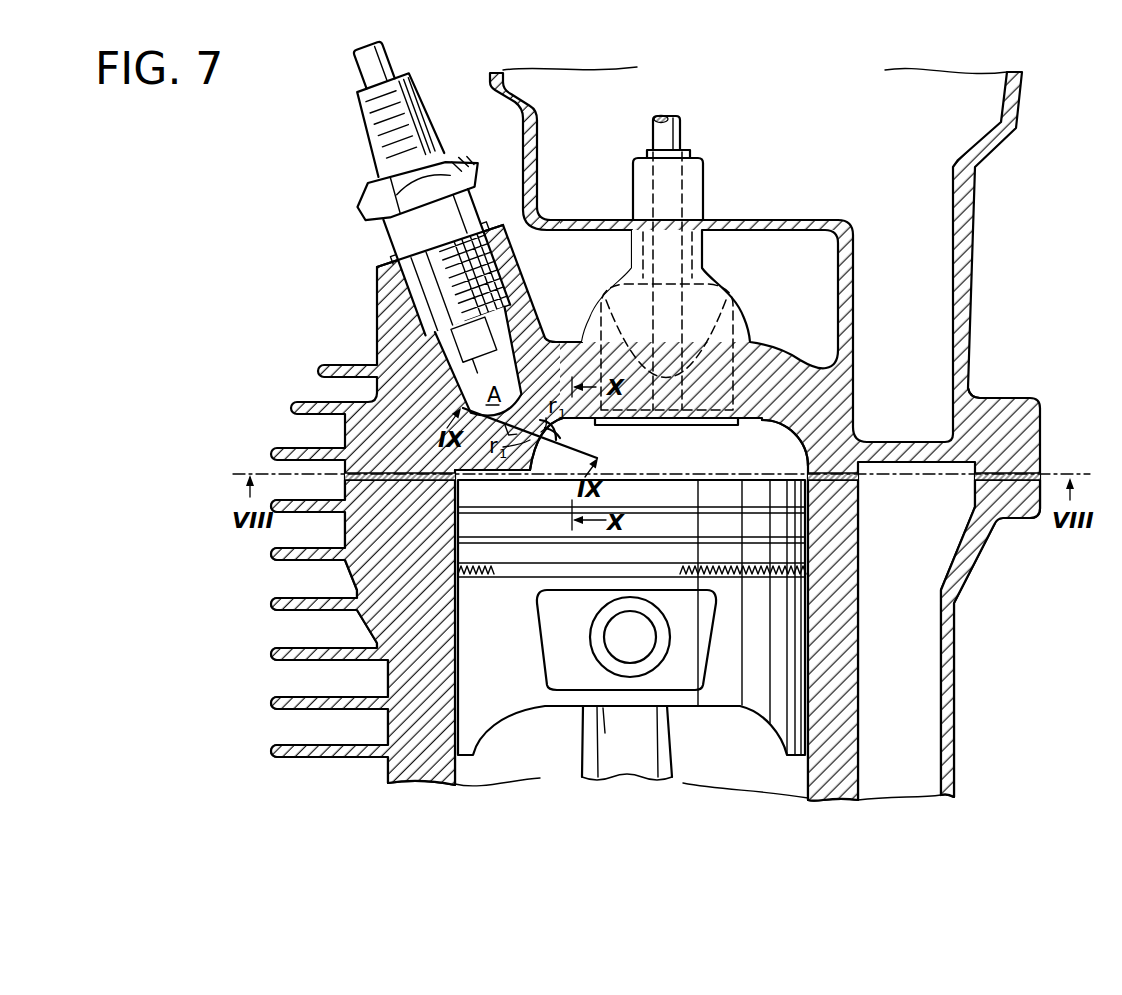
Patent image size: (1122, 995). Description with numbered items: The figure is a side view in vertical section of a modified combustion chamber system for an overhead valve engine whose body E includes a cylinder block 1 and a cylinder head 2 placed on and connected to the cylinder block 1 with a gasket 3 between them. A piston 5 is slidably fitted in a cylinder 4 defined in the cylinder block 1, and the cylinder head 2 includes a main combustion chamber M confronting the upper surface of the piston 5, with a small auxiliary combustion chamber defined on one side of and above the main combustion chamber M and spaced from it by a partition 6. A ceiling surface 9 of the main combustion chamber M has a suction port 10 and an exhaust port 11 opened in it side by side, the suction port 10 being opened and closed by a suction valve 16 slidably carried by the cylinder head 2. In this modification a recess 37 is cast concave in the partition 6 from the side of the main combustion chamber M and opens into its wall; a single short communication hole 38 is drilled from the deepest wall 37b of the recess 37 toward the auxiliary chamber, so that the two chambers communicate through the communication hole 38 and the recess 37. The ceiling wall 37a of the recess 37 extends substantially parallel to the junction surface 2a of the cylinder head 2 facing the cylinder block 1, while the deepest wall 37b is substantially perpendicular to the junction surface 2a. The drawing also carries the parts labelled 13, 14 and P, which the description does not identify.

The cylinder block 1 is at (956, 676).
The cylinder head 2 is at (966, 243).
The junction surface 2a is at (370, 478).
The gasket 3 is at (1039, 474).
The cylinder 4 is at (807, 777).
The piston 5 is at (718, 696).
The partition 6 is at (533, 420).
The ceiling surface 9 is at (766, 419).
The suction port 10 is at (727, 305).
The exhaust port 11 is at (727, 311).
The spark plug mounting boss 13 is at (420, 293).
The spark plug electrode nose 14 is at (467, 357).
The suction valve 16 is at (681, 136).
The recess 37 is at (547, 445).
The ceiling wall 37a is at (558, 431).
The deepest wall 37b is at (540, 471).
The communication hole 38 is at (546, 418).
The spark plug P is at (456, 144).
The body E is at (982, 391).
The main combustion chamber M is at (653, 465).